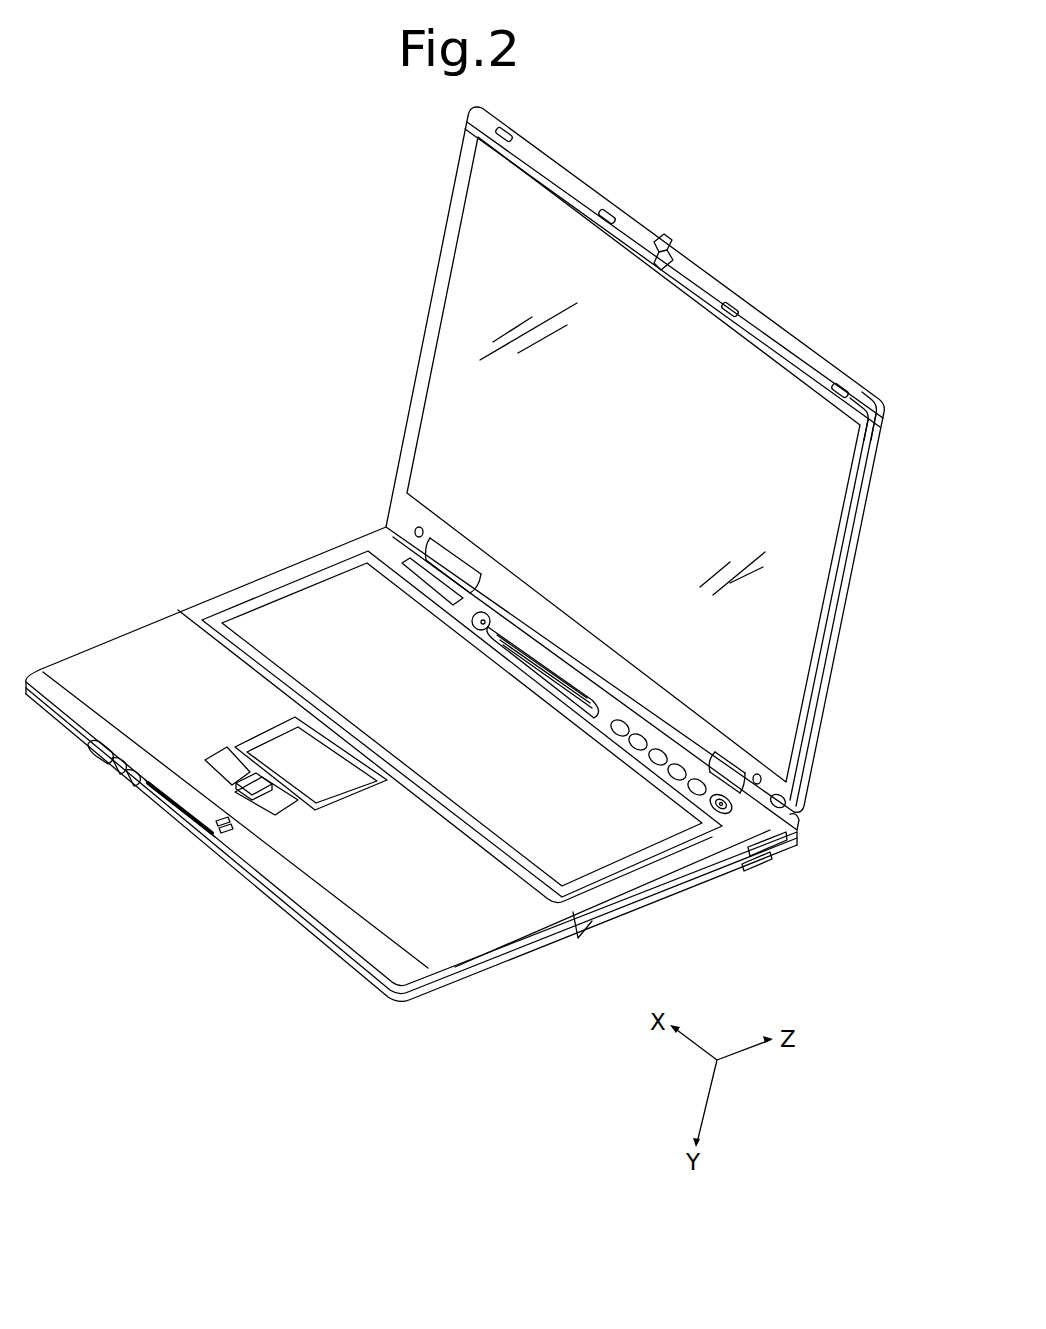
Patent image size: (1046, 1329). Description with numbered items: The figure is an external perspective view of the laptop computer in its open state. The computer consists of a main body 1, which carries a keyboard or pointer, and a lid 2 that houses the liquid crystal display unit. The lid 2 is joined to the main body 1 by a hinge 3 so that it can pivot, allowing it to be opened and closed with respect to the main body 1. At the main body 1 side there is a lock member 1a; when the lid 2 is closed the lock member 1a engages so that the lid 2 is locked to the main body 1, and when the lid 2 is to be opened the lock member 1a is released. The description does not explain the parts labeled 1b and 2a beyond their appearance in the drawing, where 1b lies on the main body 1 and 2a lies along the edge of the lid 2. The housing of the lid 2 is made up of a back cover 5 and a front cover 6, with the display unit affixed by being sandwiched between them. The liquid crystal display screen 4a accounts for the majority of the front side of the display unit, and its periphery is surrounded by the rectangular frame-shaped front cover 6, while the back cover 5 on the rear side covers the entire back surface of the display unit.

The main body 1 is at (622, 935).
The lock member 1a is at (490, 740).
The pointing device (touch pad) 1b is at (323, 778).
The lid 2 is at (748, 280).
The latch 2a is at (660, 260).
The hinge 3 is at (810, 834).
The liquid crystal display screen 4a is at (647, 484).
The back cover 5 is at (854, 584).
The front cover 6 is at (857, 407).